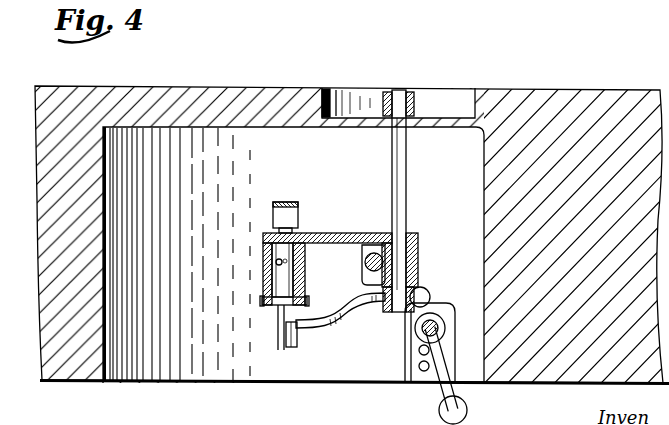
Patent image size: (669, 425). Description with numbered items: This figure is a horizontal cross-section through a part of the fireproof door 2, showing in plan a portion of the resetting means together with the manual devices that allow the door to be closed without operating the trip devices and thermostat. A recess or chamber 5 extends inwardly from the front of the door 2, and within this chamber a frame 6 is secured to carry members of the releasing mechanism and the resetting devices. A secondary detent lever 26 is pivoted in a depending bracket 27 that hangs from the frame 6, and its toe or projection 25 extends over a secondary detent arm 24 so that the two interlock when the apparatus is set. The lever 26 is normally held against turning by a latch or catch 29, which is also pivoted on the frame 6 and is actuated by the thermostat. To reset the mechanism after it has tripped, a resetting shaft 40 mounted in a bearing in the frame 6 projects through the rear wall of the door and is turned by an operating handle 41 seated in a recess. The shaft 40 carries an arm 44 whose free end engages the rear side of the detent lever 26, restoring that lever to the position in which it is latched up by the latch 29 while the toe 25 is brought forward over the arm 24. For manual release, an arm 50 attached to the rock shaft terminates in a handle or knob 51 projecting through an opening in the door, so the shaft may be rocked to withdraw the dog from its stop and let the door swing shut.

The door 2 is at (543, 113).
The recess or chamber 5 is at (205, 254).
The frame 6 is at (345, 240).
The secondary detent arm 24 is at (293, 342).
The toe or projection 25 is at (278, 338).
The secondary detent lever 26 is at (285, 278).
The depending bracket 27 is at (273, 262).
The latch or catch 29 is at (299, 214).
The resetting shaft 40 is at (403, 198).
The operating handle 41 is at (413, 100).
The arm 44 is at (345, 316).
The arm 50 is at (437, 362).
The handle or knob 51 is at (462, 410).